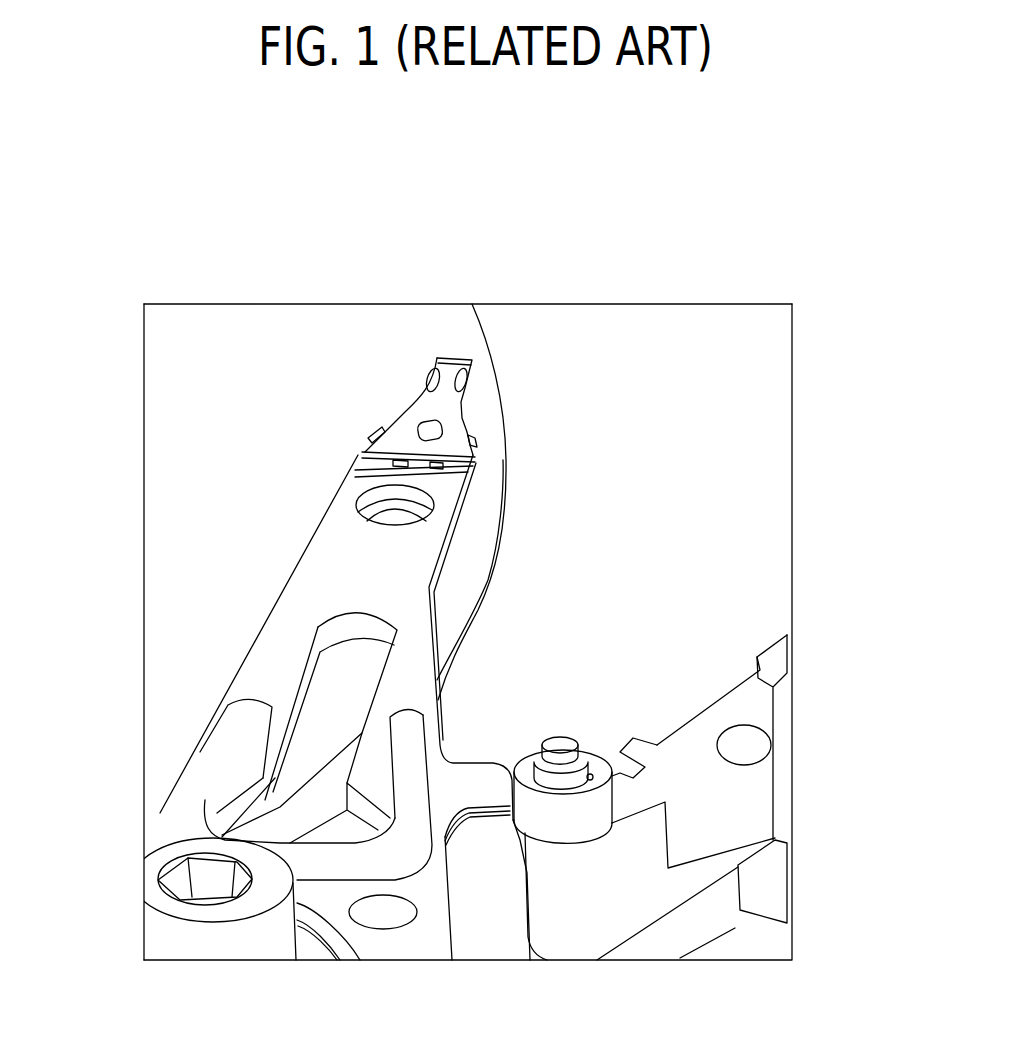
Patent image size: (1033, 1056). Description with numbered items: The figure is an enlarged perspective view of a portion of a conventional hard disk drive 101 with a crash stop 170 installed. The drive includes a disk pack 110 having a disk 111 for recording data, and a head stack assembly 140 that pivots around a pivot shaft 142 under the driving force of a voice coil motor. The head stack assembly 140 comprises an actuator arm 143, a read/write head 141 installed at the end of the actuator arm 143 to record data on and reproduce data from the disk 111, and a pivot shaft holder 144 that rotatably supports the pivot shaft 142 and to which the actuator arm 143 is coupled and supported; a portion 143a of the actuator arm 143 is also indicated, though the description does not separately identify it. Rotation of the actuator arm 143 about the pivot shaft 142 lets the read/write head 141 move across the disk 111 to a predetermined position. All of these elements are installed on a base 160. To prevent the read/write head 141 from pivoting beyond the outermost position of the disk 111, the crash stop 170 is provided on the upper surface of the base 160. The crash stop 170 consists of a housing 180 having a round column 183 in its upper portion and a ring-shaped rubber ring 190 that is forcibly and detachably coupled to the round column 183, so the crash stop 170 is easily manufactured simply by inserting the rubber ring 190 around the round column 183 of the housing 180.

The hard disk drive 101 is at (137, 230).
The disk pack 110 is at (500, 347).
The disk 111 is at (325, 357).
The head stack assembly 140 is at (316, 523).
The read/write head 141 is at (455, 352).
The pivot shaft 142 is at (210, 879).
The actuator arm 143 is at (303, 622).
The bent tab 143a is at (478, 793).
The pivot shaft holder 144 is at (343, 947).
The base 160 is at (657, 423).
The crash stop 170 is at (673, 698).
The housing 180 is at (643, 890).
The round column 183 is at (563, 740).
The rubber ring 190 is at (568, 812).